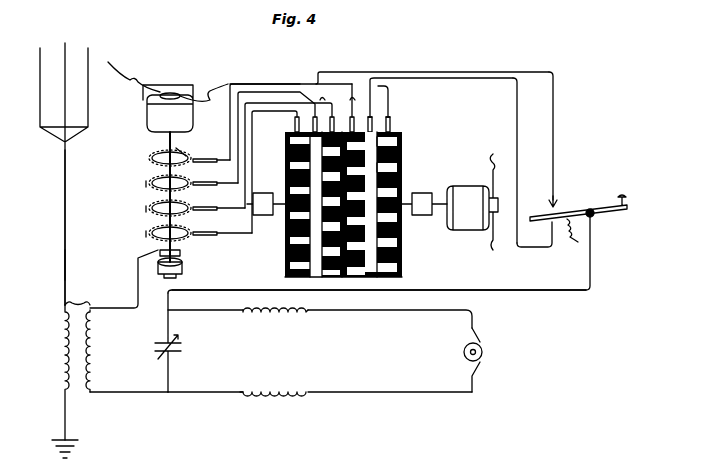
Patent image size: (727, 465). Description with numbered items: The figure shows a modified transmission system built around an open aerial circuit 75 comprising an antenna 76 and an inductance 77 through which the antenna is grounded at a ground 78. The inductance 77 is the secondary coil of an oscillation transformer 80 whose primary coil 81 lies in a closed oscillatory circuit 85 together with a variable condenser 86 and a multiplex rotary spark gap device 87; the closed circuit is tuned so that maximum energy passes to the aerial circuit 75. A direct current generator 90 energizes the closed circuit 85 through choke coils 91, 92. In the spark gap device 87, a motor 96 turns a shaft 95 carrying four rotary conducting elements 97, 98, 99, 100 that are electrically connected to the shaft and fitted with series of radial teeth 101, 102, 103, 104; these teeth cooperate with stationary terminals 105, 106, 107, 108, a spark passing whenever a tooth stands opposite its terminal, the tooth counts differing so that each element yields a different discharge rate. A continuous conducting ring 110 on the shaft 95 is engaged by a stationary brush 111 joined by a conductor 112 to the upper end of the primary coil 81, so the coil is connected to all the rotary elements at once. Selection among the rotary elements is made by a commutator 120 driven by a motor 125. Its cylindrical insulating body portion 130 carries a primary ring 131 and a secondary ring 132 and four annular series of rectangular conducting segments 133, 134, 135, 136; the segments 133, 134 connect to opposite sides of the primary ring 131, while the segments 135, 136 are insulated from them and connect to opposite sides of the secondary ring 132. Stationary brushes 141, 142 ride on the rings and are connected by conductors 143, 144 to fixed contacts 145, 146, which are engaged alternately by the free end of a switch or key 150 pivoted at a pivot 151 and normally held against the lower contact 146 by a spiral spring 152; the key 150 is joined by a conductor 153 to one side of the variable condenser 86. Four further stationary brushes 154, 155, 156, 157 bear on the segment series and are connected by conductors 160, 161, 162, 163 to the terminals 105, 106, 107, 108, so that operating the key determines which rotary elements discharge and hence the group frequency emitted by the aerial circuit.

The open aerial circuit 75 is at (49, 277).
The antenna 76 is at (65, 214).
The inductance 77 is at (60, 345).
The ground 78 is at (63, 440).
The oscillation transformer 80 is at (77, 294).
The primary coil 81 is at (92, 354).
The closed oscillatory circuit 85 is at (129, 372).
The variable condenser 86 is at (182, 350).
The multiplex rotary spark gap device 87 is at (168, 81).
The direct current generator 90 is at (483, 355).
The choke coil 91 is at (278, 317).
The choke coil 92 is at (277, 390).
The shaft 95 is at (166, 141).
The motor 96 is at (147, 114).
The rotary conducting element 97 is at (151, 157).
The rotary conducting element 98 is at (154, 180).
The rotary conducting element 99 is at (154, 204).
The rotary conducting element 100 is at (154, 229).
The radial teeth 101 is at (181, 152).
The radial teeth 102 is at (146, 185).
The radial teeth 103 is at (146, 211).
The radial teeth 104 is at (146, 234).
The stationary terminal 105 is at (211, 153).
The stationary terminal 106 is at (215, 175).
The stationary terminal 107 is at (219, 200).
The stationary terminal 108 is at (222, 225).
The continuous conducting ring 110 is at (181, 252).
The stationary brush 111 is at (158, 255).
The conductor 112 is at (133, 308).
The commutator 120 is at (403, 177).
The motor 125 is at (466, 188).
The cylindrical insulating body portion 130 is at (403, 170).
The primary ring 131 is at (398, 152).
The secondary ring 132 is at (310, 222).
The conducting segments 133 is at (403, 251).
The conducting segments 134 is at (353, 278).
The conducting segments 135 is at (330, 278).
The conducting segments 136 is at (284, 276).
The stationary brush 141 is at (373, 118).
The stationary brush 142 is at (315, 84).
The conductor 143 is at (516, 120).
The conductor 144 is at (554, 127).
The fixed contact 145 is at (568, 193).
The fixed contact 146 is at (551, 224).
The switch or key 150 is at (578, 212).
The pivot 151 is at (594, 217).
The spiral spring 152 is at (580, 242).
The conductor 153 is at (498, 290).
The stationary brush 154 is at (391, 123).
The stationary brush 155 is at (354, 100).
The stationary brush 156 is at (326, 104).
The stationary brush 157 is at (296, 120).
The conductor 160 is at (268, 92).
The conductor 161 is at (290, 103).
The conductor 162 is at (232, 84).
The conductor 163 is at (247, 132).